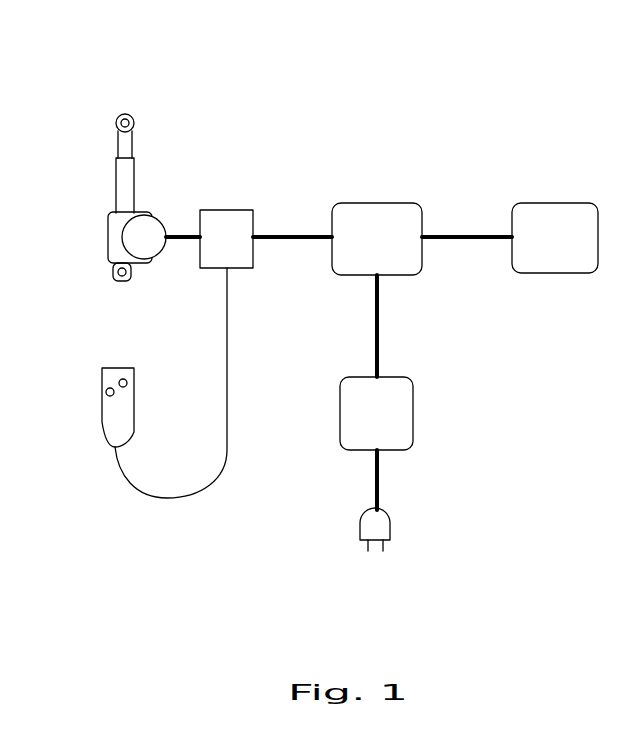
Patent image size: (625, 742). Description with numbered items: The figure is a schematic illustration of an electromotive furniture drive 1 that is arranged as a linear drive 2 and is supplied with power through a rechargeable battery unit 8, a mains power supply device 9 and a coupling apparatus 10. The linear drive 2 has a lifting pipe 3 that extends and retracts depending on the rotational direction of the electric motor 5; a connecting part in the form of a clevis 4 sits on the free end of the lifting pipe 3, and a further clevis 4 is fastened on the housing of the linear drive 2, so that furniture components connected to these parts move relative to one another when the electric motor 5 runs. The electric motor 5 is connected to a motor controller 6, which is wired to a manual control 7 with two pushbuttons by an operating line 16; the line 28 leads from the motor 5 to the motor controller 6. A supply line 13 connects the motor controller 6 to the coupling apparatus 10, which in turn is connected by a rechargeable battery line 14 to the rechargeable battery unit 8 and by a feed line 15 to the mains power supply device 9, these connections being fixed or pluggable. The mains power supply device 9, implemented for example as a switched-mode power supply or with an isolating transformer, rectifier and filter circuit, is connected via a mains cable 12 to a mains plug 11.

The electromotive furniture drive 1 is at (262, 82).
The linear drive 2 is at (116, 188).
The lifting pipe 3 is at (118, 152).
The clevis 4 is at (117, 124).
The electric motor 5 is at (145, 232).
The motor controller 6 is at (215, 238).
The manual control 7 is at (114, 421).
The rechargeable battery unit 8 is at (548, 233).
The mains power supply device 9 is at (382, 425).
The coupling apparatus 10 is at (352, 235).
The mains plug 11 is at (375, 523).
The mains cable 12 is at (380, 470).
The supply line 13 is at (263, 238).
The rechargeable battery line 14 is at (487, 237).
The feed line 15 is at (380, 298).
The operating line 16 is at (227, 417).
The motor connection line 28 is at (187, 239).